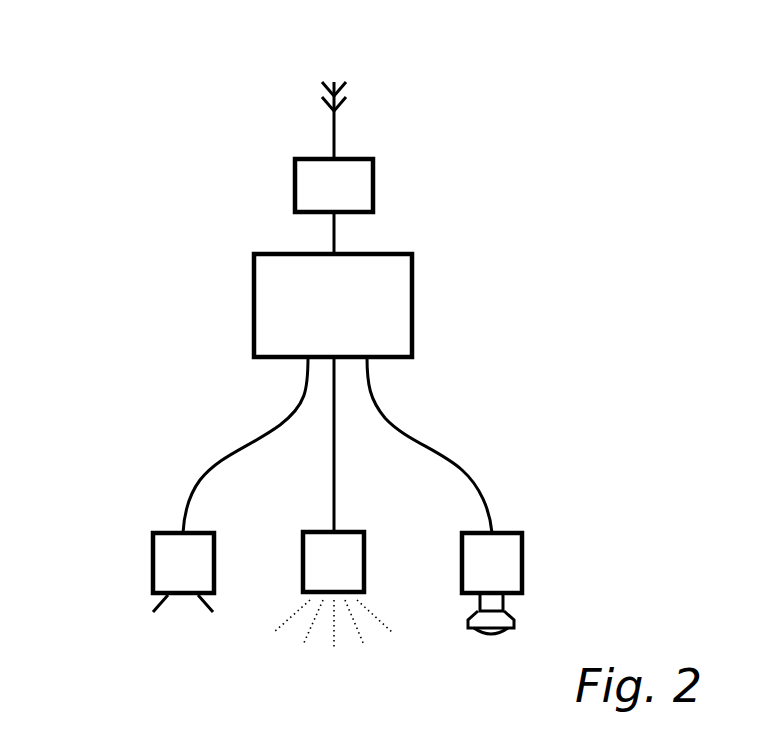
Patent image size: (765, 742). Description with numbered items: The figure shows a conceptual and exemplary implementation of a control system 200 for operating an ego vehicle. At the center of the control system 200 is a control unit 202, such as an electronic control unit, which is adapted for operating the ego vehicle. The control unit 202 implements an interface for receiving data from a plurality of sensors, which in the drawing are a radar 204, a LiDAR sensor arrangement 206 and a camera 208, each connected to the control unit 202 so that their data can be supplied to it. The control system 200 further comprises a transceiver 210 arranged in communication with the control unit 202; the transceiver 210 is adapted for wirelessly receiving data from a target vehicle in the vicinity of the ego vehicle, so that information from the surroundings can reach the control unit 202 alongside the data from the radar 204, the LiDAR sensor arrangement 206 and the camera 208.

The control system 200 is at (472, 92).
The control unit 202 is at (412, 312).
The radar 204 is at (153, 560).
The LiDAR sensor arrangement 206 is at (364, 577).
The camera 208 is at (522, 562).
The transceiver 210 is at (373, 186).